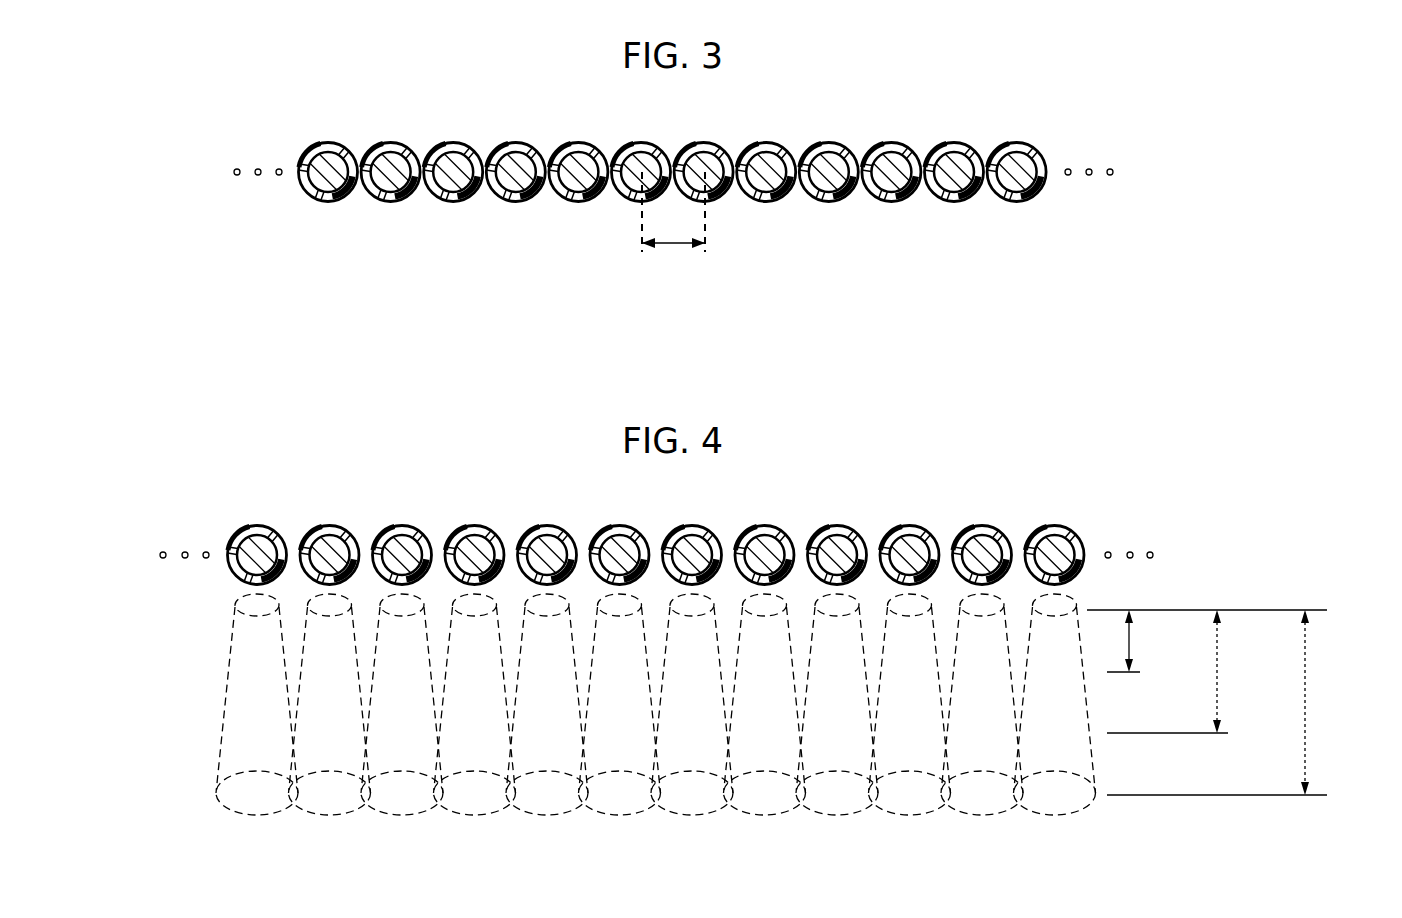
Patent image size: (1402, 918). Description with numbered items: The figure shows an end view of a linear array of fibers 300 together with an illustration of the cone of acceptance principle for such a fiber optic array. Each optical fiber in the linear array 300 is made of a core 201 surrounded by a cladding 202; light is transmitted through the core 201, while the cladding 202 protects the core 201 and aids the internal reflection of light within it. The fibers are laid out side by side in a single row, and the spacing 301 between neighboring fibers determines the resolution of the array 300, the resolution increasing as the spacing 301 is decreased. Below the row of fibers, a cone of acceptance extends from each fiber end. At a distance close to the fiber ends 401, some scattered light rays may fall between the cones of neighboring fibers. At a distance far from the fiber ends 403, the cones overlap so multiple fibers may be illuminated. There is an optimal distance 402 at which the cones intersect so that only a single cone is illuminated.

In FIG. 3, the linear array of fibers 300 is at (421, 63).
In FIG. 4, the linear array of fibers 300 is at (390, 440).
In FIG. 3, the core 201 is at (390, 160).
In FIG. 4, the core 201 is at (328, 543).
In FIG. 3, the cladding 202 is at (327, 142).
In FIG. 4, the cladding 202 is at (256, 525).
In FIG. 3, the spacing 301 is at (672, 245).
In FIG. 4, the distance close to the fiber ends 401 is at (1130, 642).
In FIG. 4, the optimal distance 402 is at (1218, 678).
In FIG. 4, the distance far from the fiber ends 403 is at (1306, 710).